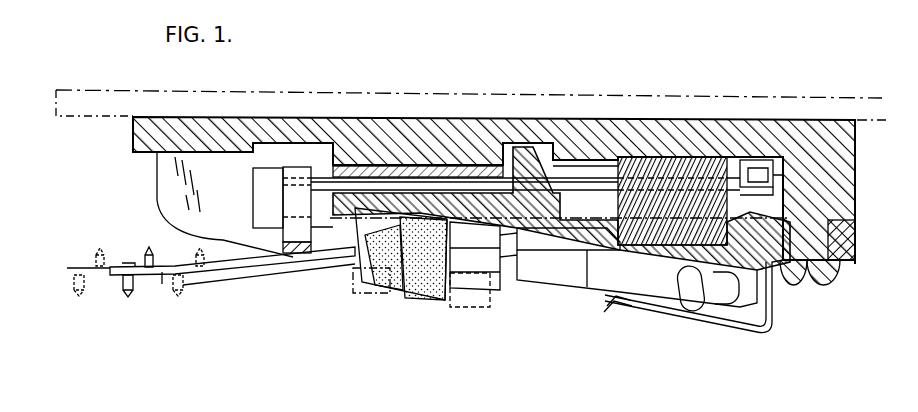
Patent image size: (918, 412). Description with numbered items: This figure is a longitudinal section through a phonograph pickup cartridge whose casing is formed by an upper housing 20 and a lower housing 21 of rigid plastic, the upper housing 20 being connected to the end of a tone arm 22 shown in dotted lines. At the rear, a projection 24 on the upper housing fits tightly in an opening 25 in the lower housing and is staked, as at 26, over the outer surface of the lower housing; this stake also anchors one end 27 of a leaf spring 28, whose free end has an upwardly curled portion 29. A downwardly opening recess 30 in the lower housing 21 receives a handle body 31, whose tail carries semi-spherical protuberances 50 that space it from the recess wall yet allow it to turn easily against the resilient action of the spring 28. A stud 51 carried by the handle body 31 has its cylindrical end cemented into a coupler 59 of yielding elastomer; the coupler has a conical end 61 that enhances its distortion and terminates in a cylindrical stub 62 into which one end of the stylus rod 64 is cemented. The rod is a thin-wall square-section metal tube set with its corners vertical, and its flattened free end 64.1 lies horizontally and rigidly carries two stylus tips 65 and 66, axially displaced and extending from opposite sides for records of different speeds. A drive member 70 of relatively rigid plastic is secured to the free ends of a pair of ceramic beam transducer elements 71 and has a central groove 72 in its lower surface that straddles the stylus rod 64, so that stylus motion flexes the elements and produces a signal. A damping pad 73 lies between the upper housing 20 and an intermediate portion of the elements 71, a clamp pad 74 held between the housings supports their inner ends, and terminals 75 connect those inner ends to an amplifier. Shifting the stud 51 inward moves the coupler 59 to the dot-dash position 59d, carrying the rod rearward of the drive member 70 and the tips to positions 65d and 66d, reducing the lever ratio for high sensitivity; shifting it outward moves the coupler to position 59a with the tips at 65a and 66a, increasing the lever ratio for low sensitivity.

The upper housing 20 is at (133, 135).
The lower housing 21 is at (557, 227).
The tone arm 22 is at (450, 100).
The projection 24 is at (817, 240).
The opening 25 is at (829, 243).
The stake 26 is at (822, 284).
The end of leaf spring 27 is at (853, 263).
The leaf spring 28 is at (764, 345).
The upwardly curled portion 29 is at (610, 318).
The recess 30 is at (723, 278).
The handle body 31 is at (600, 300).
The protuberances 50 is at (690, 270).
The stud 51 is at (482, 272).
The coupler 59 is at (428, 293).
The coupler position (dot-dash lines) 59a is at (367, 297).
The coupler position (dot-dash lines) 59d is at (485, 307).
The conical end 61 is at (400, 290).
The cylindrical stub 62 is at (362, 278).
The stylus rod 64 is at (240, 276).
The free end of stylus rod 64.1 is at (162, 272).
The stylus tip 65 is at (147, 250).
The stylus tip position (dot-dash lines) 65a is at (90, 250).
The stylus tip position (dot-dash lines) 65d is at (200, 250).
The stylus tip 66 is at (128, 291).
The stylus tip position (dot-dash lines) 66a is at (80, 292).
The stylus tip position (dot-dash lines) 66d is at (180, 284).
The drive member 70 is at (283, 184).
The transducer elements 71 is at (318, 172).
The central groove 72 is at (298, 262).
The damping pad 73 is at (375, 167).
The clamp pad 74 is at (665, 163).
The terminals 75 is at (797, 175).